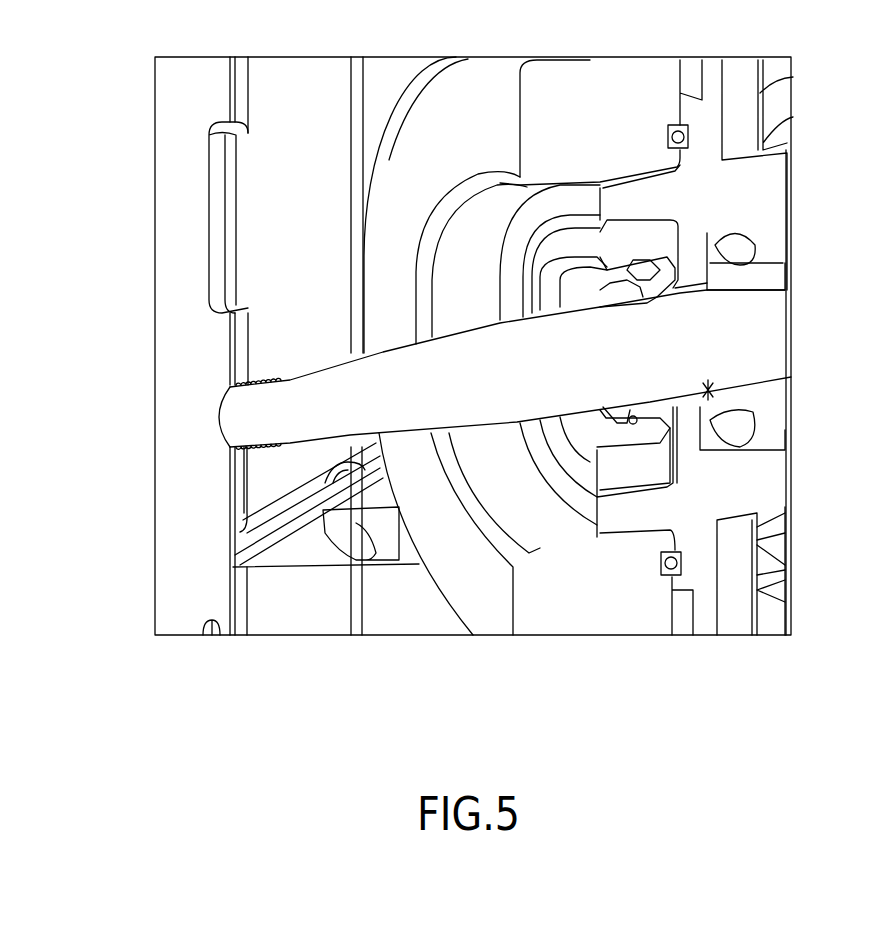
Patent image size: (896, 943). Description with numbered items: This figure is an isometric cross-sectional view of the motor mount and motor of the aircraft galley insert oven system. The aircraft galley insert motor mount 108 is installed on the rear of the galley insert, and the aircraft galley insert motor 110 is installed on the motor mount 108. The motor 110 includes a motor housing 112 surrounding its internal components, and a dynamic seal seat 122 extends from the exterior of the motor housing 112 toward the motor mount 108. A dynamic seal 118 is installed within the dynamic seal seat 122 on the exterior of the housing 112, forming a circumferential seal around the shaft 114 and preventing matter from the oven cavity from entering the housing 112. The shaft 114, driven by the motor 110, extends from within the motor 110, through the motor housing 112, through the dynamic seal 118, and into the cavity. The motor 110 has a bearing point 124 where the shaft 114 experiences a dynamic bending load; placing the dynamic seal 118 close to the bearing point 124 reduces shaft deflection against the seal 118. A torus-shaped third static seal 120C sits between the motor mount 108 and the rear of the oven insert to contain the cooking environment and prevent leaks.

The aircraft galley insert motor mount 108 is at (188, 80).
The dynamic seal seat 122 is at (580, 203).
The shaft 114 is at (253, 413).
The third static seal 120C is at (683, 132).
The aircraft galley insert motor 110 is at (765, 185).
The dynamic seal 118 is at (653, 238).
The motor housing 112 is at (693, 260).
The bearing point 124 is at (712, 390).